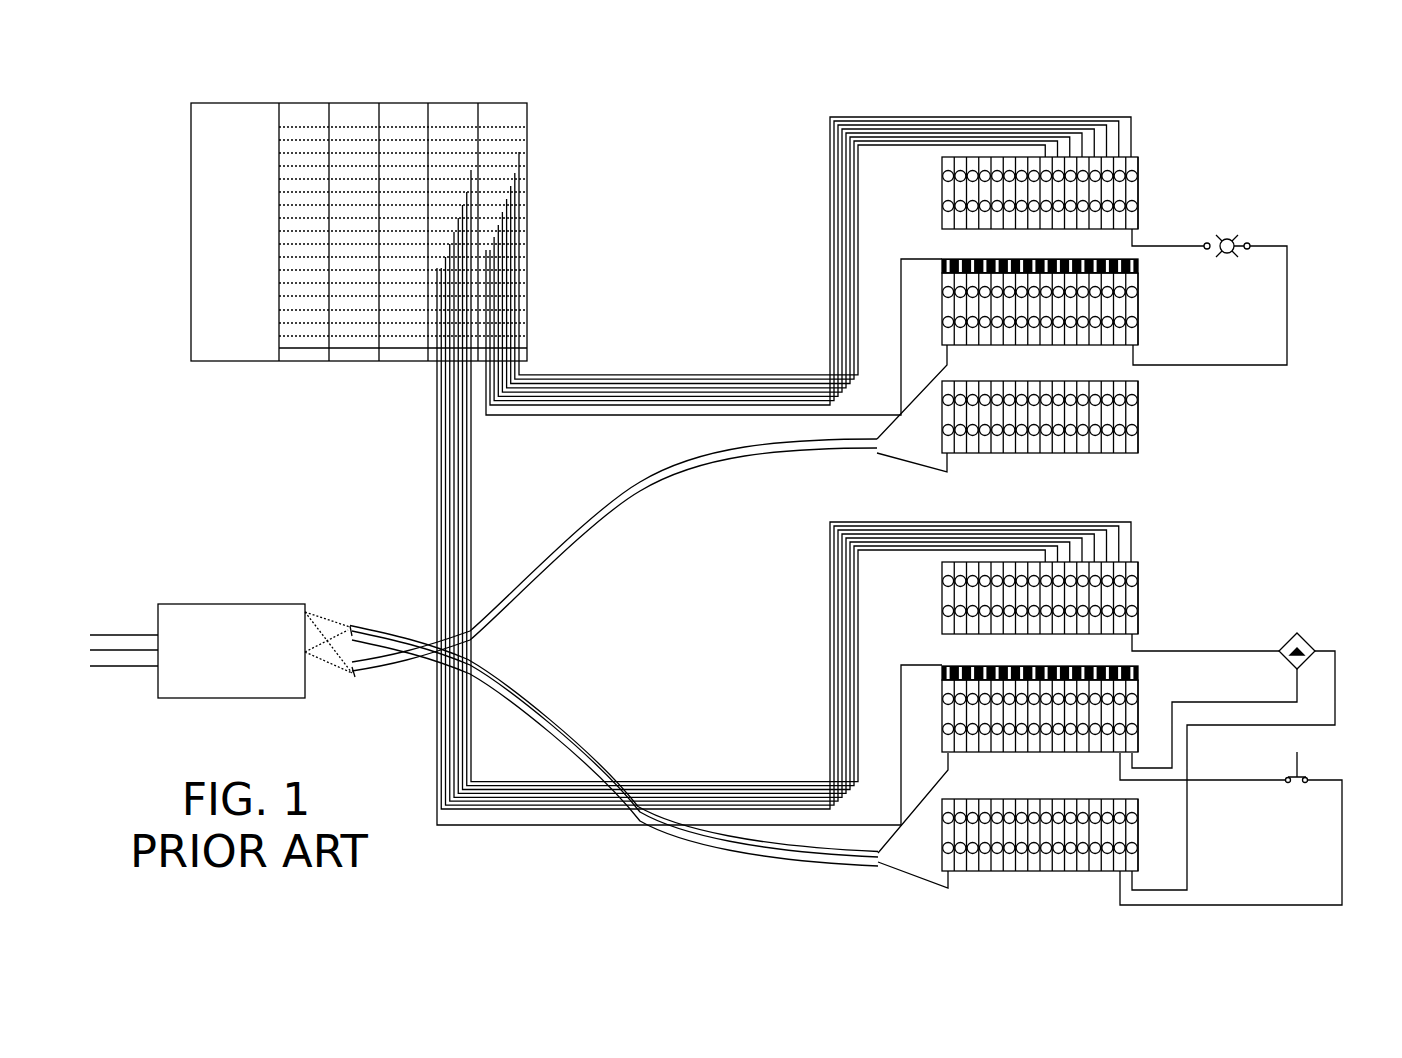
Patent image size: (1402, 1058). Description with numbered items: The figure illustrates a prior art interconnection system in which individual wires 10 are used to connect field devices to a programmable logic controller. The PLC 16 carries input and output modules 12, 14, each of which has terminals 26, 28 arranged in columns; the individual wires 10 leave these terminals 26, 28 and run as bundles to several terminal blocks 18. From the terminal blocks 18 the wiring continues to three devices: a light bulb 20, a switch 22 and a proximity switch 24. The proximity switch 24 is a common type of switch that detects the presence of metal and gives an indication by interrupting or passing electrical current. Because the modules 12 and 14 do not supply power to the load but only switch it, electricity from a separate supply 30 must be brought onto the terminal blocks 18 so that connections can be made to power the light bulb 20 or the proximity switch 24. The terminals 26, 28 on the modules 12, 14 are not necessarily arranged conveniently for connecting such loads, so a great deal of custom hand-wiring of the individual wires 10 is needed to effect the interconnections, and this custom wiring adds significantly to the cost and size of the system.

The individual wires 10 is at (957, 104).
The input/output module 12 is at (503, 115).
The input/output module 14 is at (458, 115).
The PLC 16 is at (238, 93).
The terminal blocks 18 is at (1162, 192).
The light bulb 20 is at (1240, 217).
The switch 22 is at (1328, 760).
The proximity switch 24 is at (1310, 632).
The terminals 26 is at (455, 165).
The terminals 28 is at (488, 165).
The supply 30 is at (231, 604).